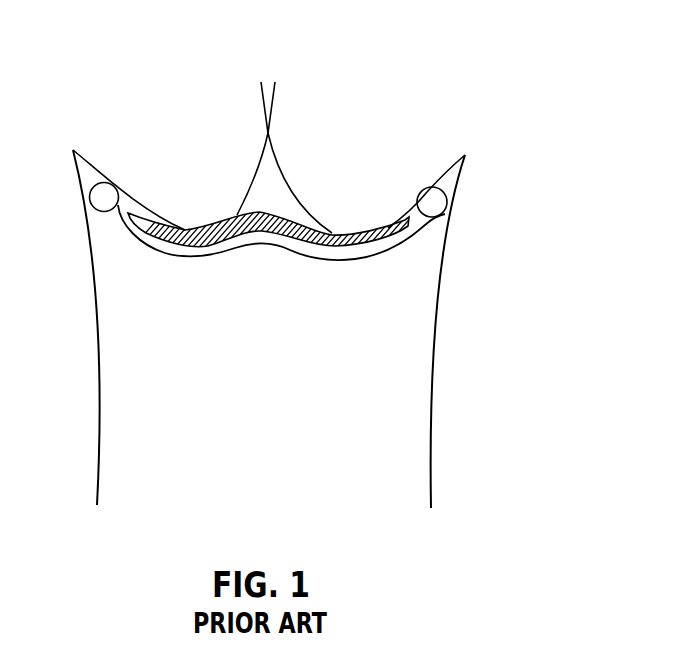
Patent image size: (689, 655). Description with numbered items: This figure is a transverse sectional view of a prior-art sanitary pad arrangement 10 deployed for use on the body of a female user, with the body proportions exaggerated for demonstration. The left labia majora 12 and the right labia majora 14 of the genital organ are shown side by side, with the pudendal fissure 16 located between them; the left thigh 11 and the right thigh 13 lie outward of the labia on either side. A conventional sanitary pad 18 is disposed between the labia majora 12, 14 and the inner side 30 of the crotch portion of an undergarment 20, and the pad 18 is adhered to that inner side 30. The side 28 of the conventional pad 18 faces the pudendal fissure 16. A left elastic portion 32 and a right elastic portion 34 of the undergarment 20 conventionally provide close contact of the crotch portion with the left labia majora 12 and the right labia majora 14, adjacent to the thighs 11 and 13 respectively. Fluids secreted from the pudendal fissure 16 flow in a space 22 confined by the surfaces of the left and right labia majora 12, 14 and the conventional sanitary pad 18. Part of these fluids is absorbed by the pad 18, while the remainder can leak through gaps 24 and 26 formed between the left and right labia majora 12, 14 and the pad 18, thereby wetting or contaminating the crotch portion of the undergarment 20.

The prior art dental restoration 10 is at (297, 42).
The left thigh 11 is at (471, 390).
The left labia majora 12 is at (383, 147).
The right thigh 13 is at (42, 378).
The right labia majora 14 is at (191, 144).
The pudendal fissure 16 is at (274, 126).
The conventional sanitary pad 18 is at (282, 213).
The undergarment 20 is at (268, 241).
The space 22 is at (262, 187).
The gap 24 is at (401, 212).
The gap 26 is at (147, 221).
The side of pad facing pudendal fissure 28 is at (243, 217).
The inner side of crotch portion 30 is at (333, 235).
The left elastic portion 32 is at (425, 197).
The right elastic portion 34 is at (107, 193).